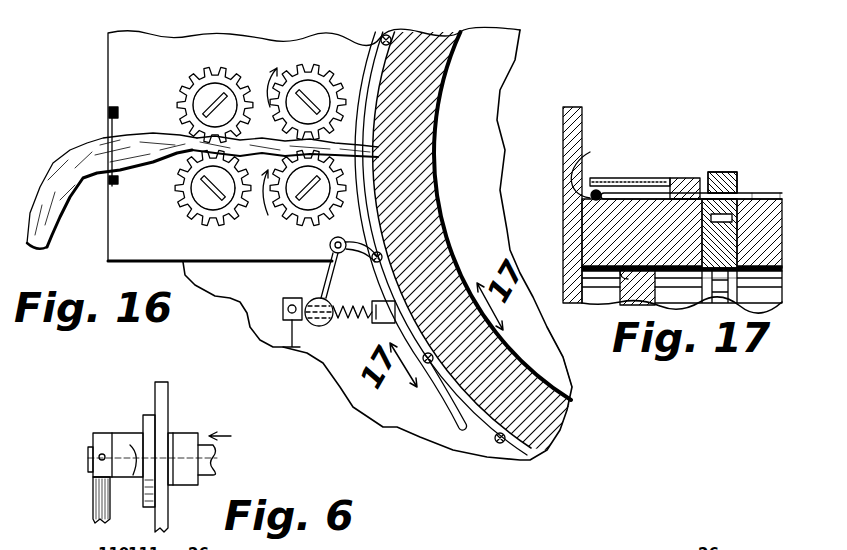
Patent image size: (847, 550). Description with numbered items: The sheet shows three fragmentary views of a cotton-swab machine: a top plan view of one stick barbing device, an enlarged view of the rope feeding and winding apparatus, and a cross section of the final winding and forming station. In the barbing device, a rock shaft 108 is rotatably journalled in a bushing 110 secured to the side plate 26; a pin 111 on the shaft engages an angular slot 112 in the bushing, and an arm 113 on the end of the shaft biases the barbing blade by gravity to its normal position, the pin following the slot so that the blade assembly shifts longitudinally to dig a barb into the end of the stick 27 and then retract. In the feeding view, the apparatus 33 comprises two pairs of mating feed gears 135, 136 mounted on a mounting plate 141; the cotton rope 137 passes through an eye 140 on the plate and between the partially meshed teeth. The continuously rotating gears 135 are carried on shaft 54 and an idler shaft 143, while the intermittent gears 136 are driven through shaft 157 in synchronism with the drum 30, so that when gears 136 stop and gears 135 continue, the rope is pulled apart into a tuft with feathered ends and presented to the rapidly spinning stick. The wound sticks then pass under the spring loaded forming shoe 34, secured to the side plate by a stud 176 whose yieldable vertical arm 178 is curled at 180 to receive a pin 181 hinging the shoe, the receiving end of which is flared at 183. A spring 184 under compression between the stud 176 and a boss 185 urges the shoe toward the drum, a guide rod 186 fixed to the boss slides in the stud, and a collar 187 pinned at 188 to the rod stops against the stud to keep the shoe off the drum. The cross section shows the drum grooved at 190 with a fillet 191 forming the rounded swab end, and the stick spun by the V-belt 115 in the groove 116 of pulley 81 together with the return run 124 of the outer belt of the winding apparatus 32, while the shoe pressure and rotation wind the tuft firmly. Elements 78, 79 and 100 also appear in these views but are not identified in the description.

In FIG. 16, the mounting plate 141 is at (162, 40).
In FIG. 16, the drum 30 is at (447, 93).
In FIG. 16, the forming shoe 34 is at (451, 396).
In FIG. 17, the forming shoe 34 is at (625, 173).
In FIG. 16, the stick 27 is at (383, 36).
In FIG. 17, the stick 27 is at (780, 197).
In FIG. 16, the side plate 26 is at (457, 442).
In FIG. 17, the side plate 26 is at (585, 125).
In FIG. 6, the side plate 26 is at (163, 390).
In FIG. 16, the frame section 79 is at (504, 365).
In FIG. 17, the frame section 79 is at (610, 273).
In FIG. 16, the intermittent feed gears 136 is at (216, 66).
In FIG. 16, the continuous feed gears 135 is at (312, 72).
In FIG. 16, the idler shaft 143 is at (197, 106).
In FIG. 16, the shaft 54 is at (322, 92).
In FIG. 16, the shaft 157 is at (186, 195).
In FIG. 16, the cotton rope 137 is at (60, 170).
In FIG. 16, the eye 140 is at (109, 112).
In FIG. 16, the rope severing and feeding apparatus 33 is at (131, 230).
In FIG. 16, the curled end 180 is at (333, 240).
In FIG. 16, the pin 181 is at (330, 247).
In FIG. 16, the flared receiving end 183 is at (365, 248).
In FIG. 16, the stud 176 is at (323, 326).
In FIG. 16, the boss 185 is at (396, 304).
In FIG. 16, the pin 188 is at (283, 306).
In FIG. 16, the collar 187 is at (292, 347).
In FIG. 16, the vertical arm 178 is at (322, 272).
In FIG. 16, the guide rod 186 is at (348, 304).
In FIG. 16, the spring 184 is at (352, 334).
In FIG. 17, the body block 78 is at (768, 214).
In FIG. 17, the groove 116 is at (742, 242).
In FIG. 17, the winding apparatus 32 is at (719, 172).
In FIG. 17, the return run 124 is at (740, 178).
In FIG. 17, the block 100 is at (690, 180).
In FIG. 17, the groove 190 is at (662, 193).
In FIG. 17, the fillet 191 is at (587, 168).
In FIG. 17, the V-belt 115 is at (752, 197).
In FIG. 17, the V-belt pulley 81 is at (706, 274).
In FIG. 6, the bushing 110 is at (118, 440).
In FIG. 6, the rock shaft 108 is at (90, 457).
In FIG. 6, the angular slot 112 is at (133, 438).
In FIG. 6, the pin 111 is at (130, 478).
In FIG. 6, the arm 113 is at (98, 490).